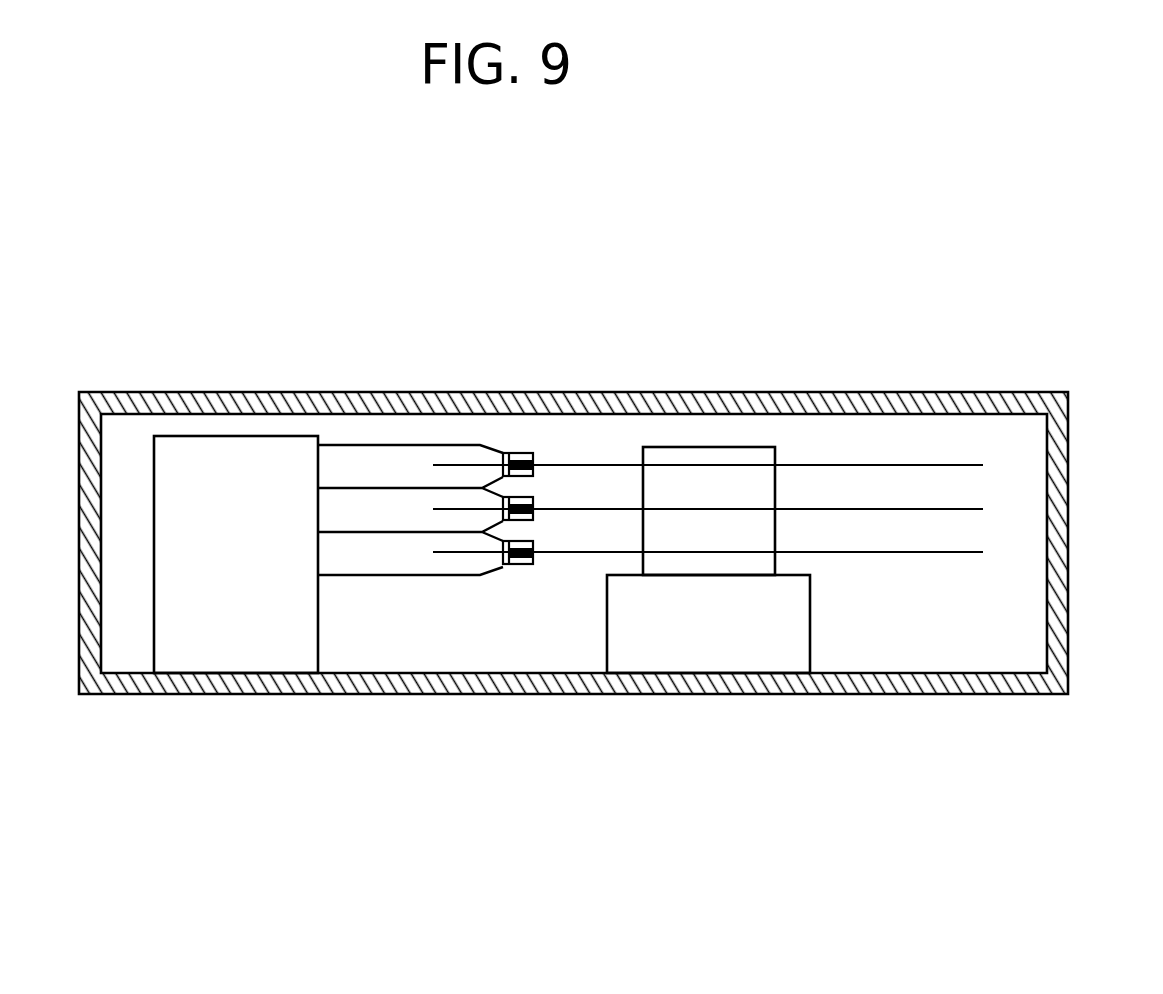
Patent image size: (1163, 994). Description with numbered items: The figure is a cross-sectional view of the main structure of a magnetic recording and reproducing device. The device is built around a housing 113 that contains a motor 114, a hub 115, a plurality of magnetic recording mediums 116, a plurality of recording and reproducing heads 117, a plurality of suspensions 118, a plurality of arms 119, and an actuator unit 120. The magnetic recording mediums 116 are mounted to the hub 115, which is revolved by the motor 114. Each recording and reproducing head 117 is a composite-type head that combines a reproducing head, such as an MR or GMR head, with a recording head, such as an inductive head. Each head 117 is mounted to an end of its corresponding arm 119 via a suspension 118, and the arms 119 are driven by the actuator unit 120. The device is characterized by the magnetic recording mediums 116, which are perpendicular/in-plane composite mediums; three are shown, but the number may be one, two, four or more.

The housing 113 is at (1062, 648).
The motor 114 is at (697, 657).
The hub 115 is at (700, 446).
The magnetic recording medium 116 is at (892, 465).
The recording and reproducing head 117 is at (537, 453).
The suspension 118 is at (495, 452).
The arm 119 is at (368, 444).
The actuator unit 120 is at (257, 657).